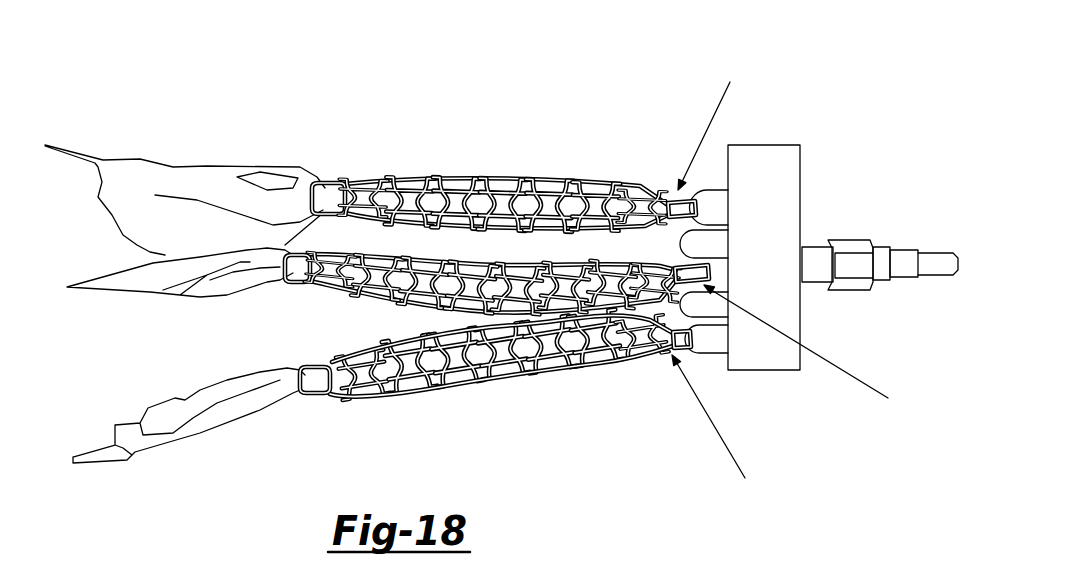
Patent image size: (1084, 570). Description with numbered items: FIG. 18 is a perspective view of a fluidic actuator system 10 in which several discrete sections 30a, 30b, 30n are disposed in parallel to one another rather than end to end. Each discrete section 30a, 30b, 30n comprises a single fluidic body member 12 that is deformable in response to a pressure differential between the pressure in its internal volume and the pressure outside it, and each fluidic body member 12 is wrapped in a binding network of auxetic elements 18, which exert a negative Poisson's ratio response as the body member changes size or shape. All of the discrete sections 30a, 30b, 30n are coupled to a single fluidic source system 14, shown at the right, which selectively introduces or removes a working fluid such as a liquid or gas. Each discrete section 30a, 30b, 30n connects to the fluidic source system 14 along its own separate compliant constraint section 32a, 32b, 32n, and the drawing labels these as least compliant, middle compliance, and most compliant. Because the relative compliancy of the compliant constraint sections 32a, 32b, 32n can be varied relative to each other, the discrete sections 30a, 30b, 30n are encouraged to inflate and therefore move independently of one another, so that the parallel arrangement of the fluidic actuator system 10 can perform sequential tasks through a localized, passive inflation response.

The fluidic actuator system 10 is at (543, 55).
The fluidic body member 12 is at (480, 184).
The fluidic source system 14 is at (942, 258).
The auxetic elements 18 is at (540, 184).
The discrete section 30a is at (337, 168).
The discrete section 30b is at (323, 300).
The discrete section 30n is at (363, 410).
The compliant constraint section 32a is at (670, 192).
The compliant constraint section 32b is at (648, 190).
The compliant constraint section 32n is at (666, 360).